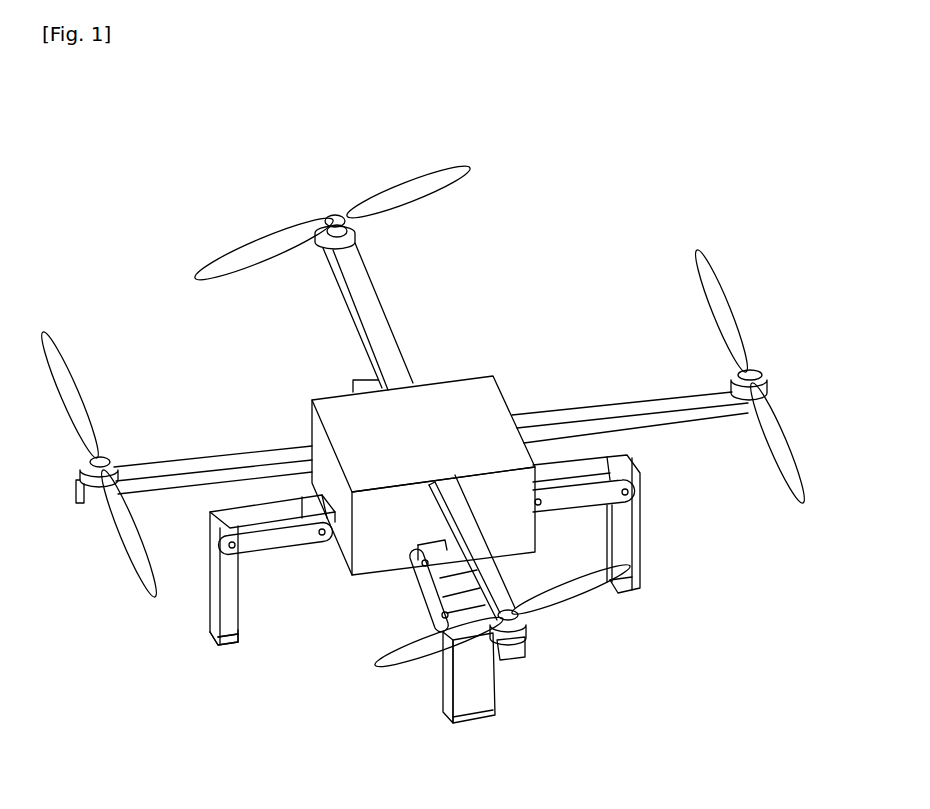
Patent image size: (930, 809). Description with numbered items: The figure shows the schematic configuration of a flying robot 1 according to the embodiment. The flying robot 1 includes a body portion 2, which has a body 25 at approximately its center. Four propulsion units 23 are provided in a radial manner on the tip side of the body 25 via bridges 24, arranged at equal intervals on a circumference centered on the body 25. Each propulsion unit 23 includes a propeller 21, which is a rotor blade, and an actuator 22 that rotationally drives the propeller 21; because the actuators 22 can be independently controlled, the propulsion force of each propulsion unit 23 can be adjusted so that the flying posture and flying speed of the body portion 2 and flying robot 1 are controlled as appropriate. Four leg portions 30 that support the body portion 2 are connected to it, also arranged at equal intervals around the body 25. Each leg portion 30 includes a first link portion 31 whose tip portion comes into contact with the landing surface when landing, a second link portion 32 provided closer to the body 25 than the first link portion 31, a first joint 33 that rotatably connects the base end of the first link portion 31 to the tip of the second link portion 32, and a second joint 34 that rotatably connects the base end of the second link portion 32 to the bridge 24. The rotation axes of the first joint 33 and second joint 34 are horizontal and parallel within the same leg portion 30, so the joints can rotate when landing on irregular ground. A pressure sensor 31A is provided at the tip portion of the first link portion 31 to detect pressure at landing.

The flying robot 1 is at (635, 160).
The body portion 2 is at (463, 328).
The propeller 21 is at (83, 390).
The actuator 22 is at (122, 457).
The propulsion unit 23 is at (84, 545).
The bridge 24 is at (243, 457).
The body 25 is at (482, 392).
The leg portion 30 is at (304, 671).
The first link portion 31 is at (197, 595).
The pressure sensor 31A is at (228, 645).
The second link portion 32 is at (273, 543).
The first joint 33 is at (240, 553).
The second joint 34 is at (320, 541).